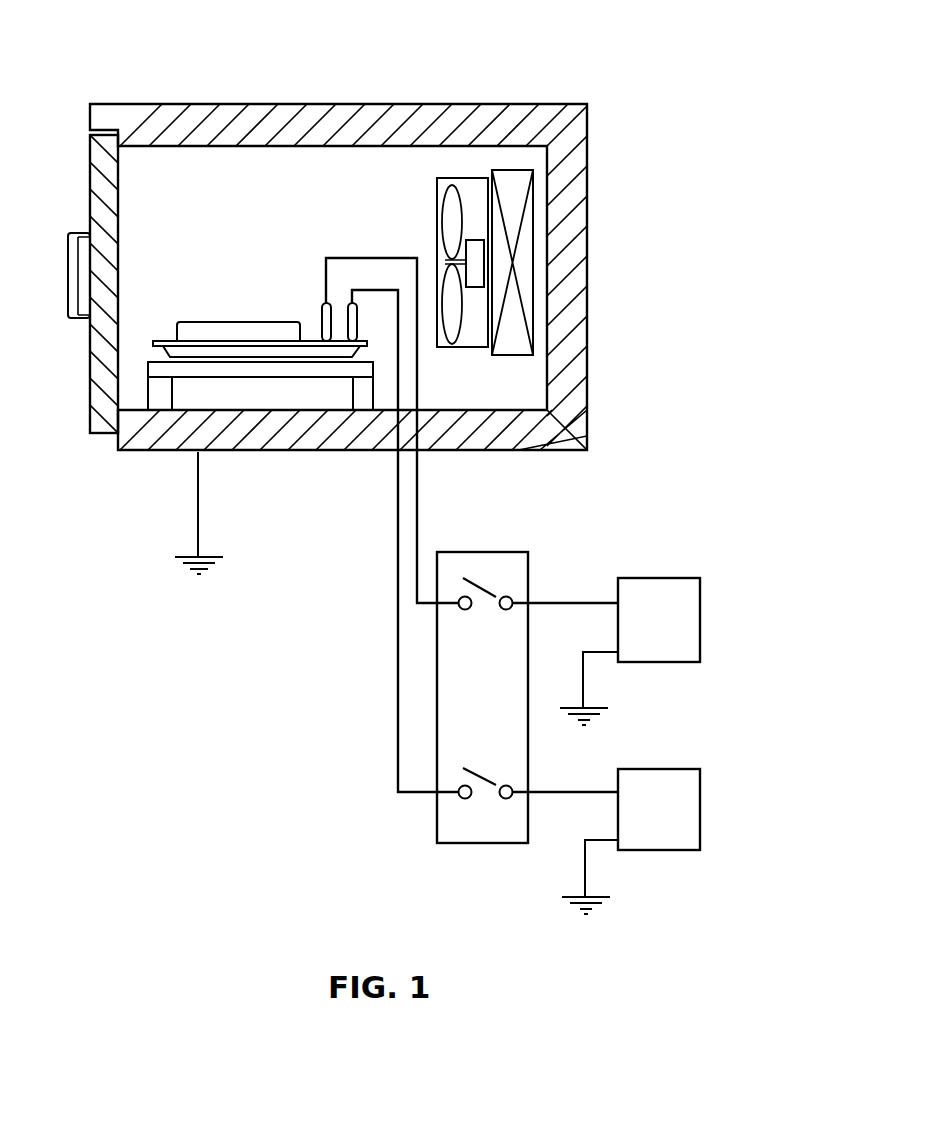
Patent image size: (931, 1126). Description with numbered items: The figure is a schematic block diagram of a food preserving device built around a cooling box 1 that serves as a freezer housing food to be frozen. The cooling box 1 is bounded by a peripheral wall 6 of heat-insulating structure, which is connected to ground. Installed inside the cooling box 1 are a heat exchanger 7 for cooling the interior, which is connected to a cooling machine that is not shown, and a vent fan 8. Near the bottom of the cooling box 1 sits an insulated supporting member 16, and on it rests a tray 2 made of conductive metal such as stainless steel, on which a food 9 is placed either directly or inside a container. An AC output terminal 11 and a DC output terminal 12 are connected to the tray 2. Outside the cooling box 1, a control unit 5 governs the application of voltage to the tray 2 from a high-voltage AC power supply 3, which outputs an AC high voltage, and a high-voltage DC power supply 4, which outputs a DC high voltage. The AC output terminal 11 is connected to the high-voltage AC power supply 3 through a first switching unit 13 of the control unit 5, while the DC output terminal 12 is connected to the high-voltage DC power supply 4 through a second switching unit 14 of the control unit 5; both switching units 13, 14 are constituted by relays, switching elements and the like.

The cooling box 1 is at (497, 84).
The tray 2 is at (166, 342).
The high-voltage AC power supply 3 is at (647, 578).
The high-voltage DC power supply 4 is at (657, 852).
The control unit 5 is at (512, 552).
The peripheral wall 6 is at (586, 187).
The heat exchanger 7 is at (505, 356).
The vent fan 8 is at (447, 205).
The food 9 is at (215, 331).
The AC output terminal 11 is at (318, 312).
The DC output terminal 12 is at (364, 313).
The first switching unit 13 is at (485, 579).
The second switching unit 14 is at (478, 808).
The insulated supporting member 16 is at (252, 371).